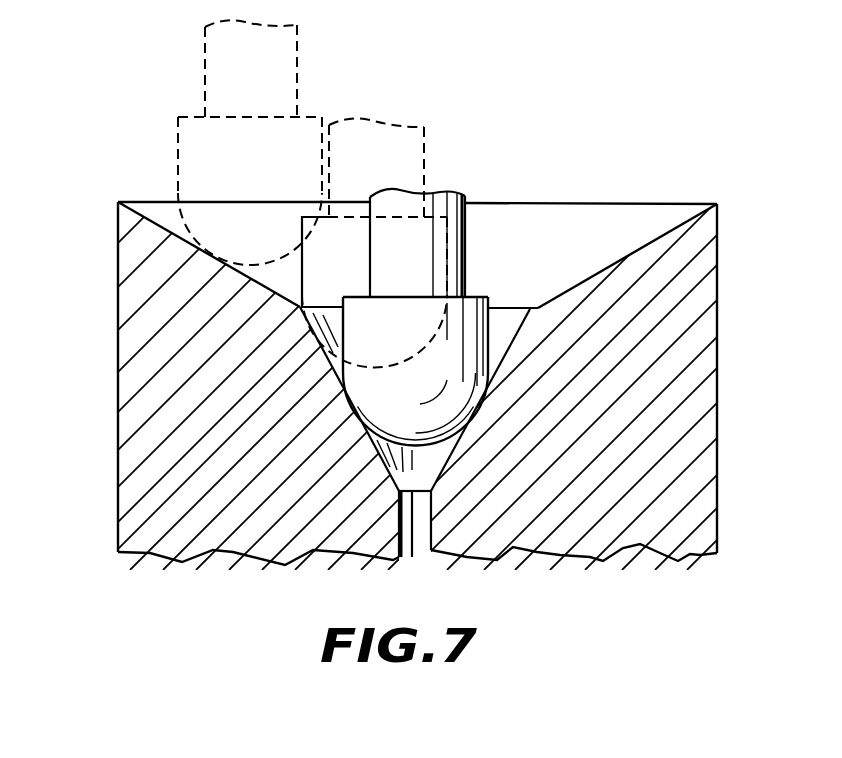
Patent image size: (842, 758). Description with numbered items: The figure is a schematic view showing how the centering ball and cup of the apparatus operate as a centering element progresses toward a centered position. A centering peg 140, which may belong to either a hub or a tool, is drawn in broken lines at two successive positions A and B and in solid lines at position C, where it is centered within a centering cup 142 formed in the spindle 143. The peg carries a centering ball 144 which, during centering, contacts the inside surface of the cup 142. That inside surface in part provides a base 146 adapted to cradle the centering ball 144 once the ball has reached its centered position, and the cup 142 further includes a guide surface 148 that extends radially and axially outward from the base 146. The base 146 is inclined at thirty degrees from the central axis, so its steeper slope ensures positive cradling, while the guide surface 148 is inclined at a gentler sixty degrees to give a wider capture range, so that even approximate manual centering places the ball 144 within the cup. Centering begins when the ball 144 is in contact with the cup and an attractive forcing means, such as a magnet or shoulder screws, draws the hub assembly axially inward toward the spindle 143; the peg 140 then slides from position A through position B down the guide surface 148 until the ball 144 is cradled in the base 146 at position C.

The centering peg 140 is at (227, 88).
The centering cup 142 is at (648, 190).
The spindle 143 is at (140, 402).
The centering ball 144 is at (198, 153).
The base 146 is at (530, 320).
The guide surface 148 is at (652, 243).
The first broken-line position of centering peg A is at (210, 44).
The second broken-line position of centering peg B is at (405, 137).
The centered position of centering peg C is at (442, 197).